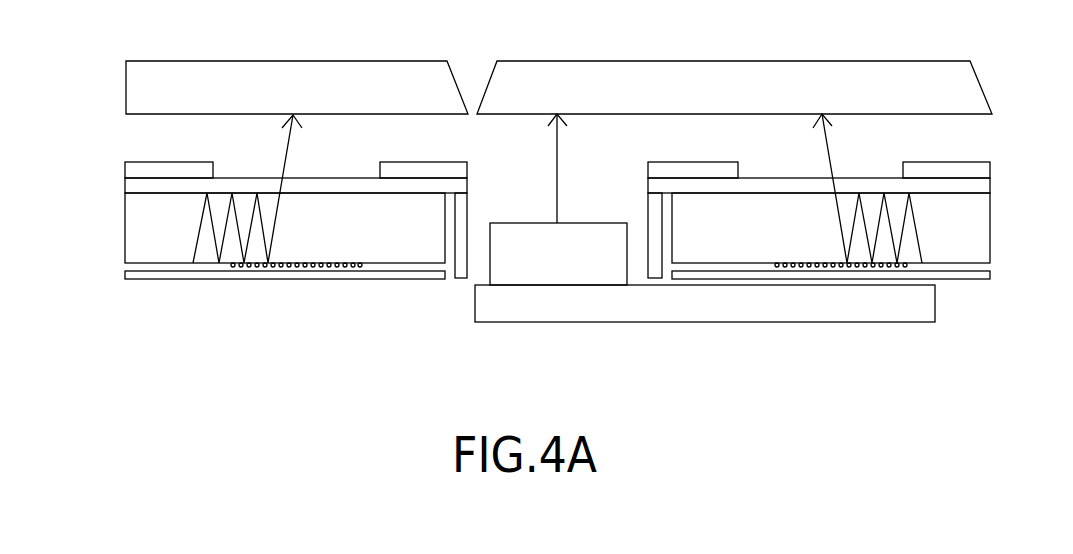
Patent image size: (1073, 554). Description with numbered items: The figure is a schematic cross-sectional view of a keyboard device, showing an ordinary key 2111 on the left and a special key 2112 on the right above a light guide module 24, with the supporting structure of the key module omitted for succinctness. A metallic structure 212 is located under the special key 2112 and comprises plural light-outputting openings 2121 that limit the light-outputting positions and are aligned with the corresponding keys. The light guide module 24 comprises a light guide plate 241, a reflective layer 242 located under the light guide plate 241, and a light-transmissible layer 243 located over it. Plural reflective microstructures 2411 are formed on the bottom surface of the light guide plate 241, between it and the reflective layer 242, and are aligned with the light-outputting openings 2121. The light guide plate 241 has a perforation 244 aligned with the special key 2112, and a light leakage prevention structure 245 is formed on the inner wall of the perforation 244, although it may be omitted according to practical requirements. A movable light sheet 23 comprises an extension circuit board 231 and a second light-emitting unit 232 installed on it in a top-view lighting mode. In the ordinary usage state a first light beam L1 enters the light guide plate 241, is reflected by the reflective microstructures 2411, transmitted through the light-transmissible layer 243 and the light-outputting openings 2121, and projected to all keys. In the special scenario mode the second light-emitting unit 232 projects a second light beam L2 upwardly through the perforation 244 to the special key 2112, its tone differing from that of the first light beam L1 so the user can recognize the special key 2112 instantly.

The ordinary key 2111 is at (257, 73).
The special key 2112 is at (763, 75).
The metallic structure 212 is at (187, 168).
The light-outputting openings 2121 is at (378, 176).
The light-transmissible layer 243 is at (137, 183).
The light guide plate 241 is at (138, 236).
The reflective layer 242 is at (187, 273).
The reflective microstructures 2411 is at (323, 265).
The light leakage prevention structure 245 is at (462, 228).
The perforation 244 is at (600, 198).
The light guide module 24 is at (826, 268).
The movable light sheet 23 is at (723, 298).
The extension circuit board 231 is at (827, 307).
The second light-emitting unit 232 is at (562, 265).
The first light beam L1 is at (287, 168).
The second light beam L2 is at (558, 188).